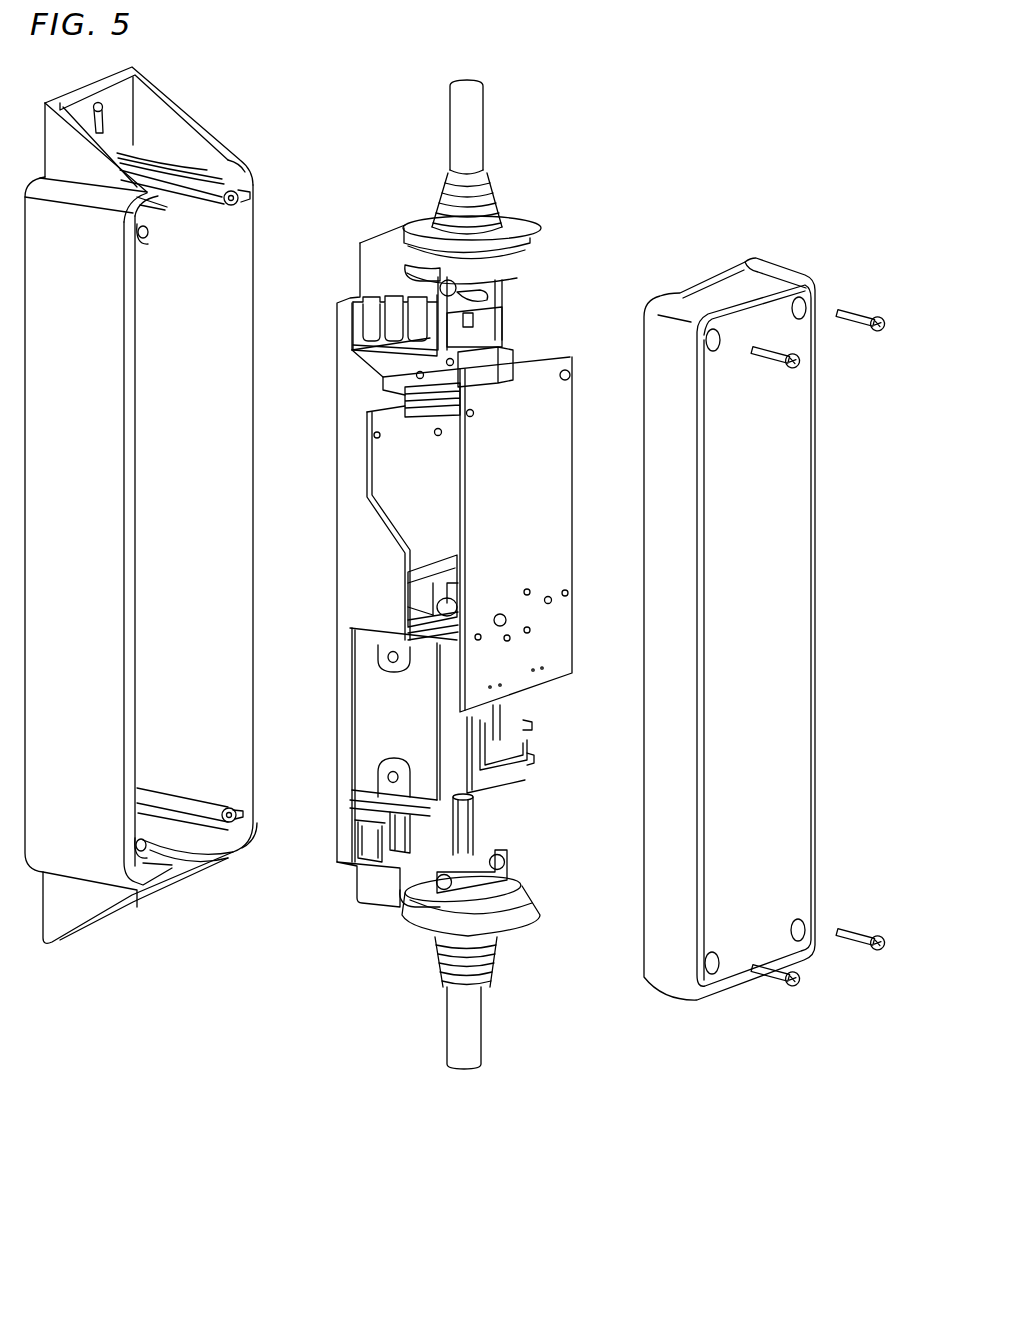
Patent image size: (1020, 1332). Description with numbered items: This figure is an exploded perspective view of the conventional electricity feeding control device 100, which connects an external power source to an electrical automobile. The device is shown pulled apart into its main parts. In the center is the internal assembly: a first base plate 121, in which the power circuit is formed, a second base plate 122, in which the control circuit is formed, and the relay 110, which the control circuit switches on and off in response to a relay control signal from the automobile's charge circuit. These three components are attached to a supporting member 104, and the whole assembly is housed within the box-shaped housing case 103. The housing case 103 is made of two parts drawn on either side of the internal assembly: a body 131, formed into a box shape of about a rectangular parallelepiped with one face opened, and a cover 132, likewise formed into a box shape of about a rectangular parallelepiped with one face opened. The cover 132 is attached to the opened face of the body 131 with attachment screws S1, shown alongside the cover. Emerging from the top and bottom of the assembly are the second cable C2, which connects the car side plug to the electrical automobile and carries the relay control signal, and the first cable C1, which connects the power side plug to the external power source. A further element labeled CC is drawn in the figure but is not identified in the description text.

The electricity feeding control device 100 is at (451, 574).
The housing case 103 is at (420, 623).
The supporting member 104 is at (333, 652).
The relay 110 is at (372, 722).
The first base plate 121 is at (397, 470).
The second base plate 122 is at (548, 443).
The body 131 is at (121, 912).
The cover 132 is at (678, 995).
The first cable C1 is at (477, 1008).
The second cable C2 is at (473, 120).
The cable connector CC is at (488, 842).
The attachment screws S1 is at (848, 328).